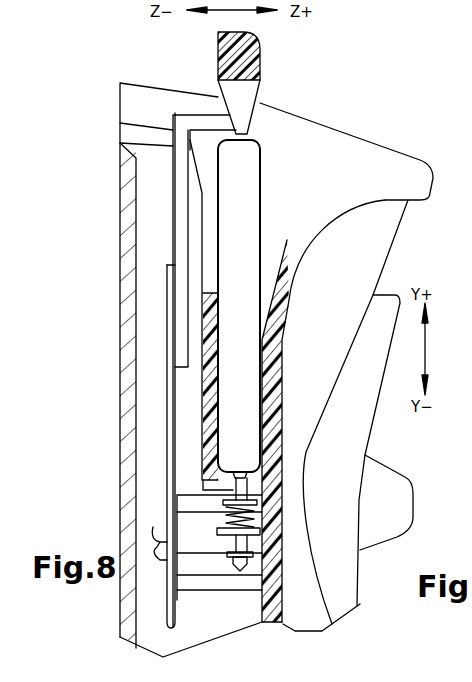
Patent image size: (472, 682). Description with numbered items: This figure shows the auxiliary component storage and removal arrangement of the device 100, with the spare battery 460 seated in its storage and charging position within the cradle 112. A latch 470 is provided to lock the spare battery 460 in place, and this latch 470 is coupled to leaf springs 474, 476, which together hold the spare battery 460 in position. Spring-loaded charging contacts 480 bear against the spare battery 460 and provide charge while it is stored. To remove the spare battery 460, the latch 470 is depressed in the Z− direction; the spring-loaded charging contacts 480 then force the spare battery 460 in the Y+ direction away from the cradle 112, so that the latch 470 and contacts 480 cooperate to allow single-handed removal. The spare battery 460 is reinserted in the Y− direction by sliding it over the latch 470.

The actuator assembly 100 is at (366, 110).
The cradle 112 is at (380, 134).
The spare battery 460 is at (260, 188).
The latch 470 is at (262, 63).
The leaf spring 474 is at (158, 397).
The leaf spring 476 is at (158, 397).
The spring-loaded charging contacts 480 is at (239, 572).